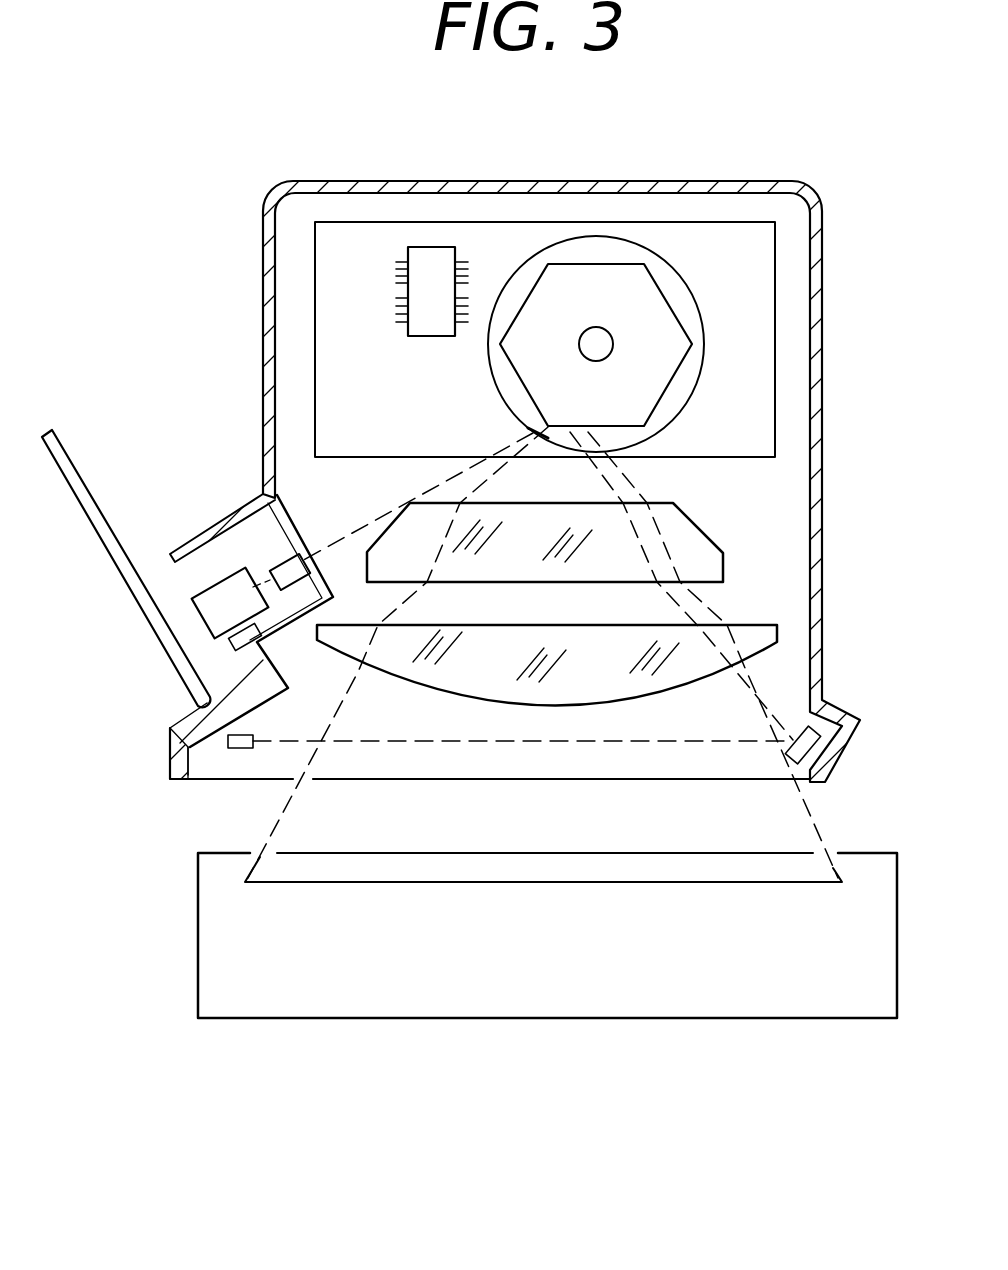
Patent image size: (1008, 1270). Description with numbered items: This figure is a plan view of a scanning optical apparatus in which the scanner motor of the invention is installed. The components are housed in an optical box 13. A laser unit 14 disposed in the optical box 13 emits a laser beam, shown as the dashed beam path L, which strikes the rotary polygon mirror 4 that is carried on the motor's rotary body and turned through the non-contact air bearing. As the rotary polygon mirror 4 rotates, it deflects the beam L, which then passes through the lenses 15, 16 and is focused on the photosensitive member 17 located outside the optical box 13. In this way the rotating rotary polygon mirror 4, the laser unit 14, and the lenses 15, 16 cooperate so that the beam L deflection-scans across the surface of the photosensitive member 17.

The rotary polygon mirror 4 is at (608, 282).
The optical box 13 is at (691, 193).
The laser unit 14 is at (190, 631).
The lens 15 is at (760, 637).
The lens 16 is at (712, 552).
The photosensitive member 17 is at (585, 995).
The light beam L is at (826, 848).